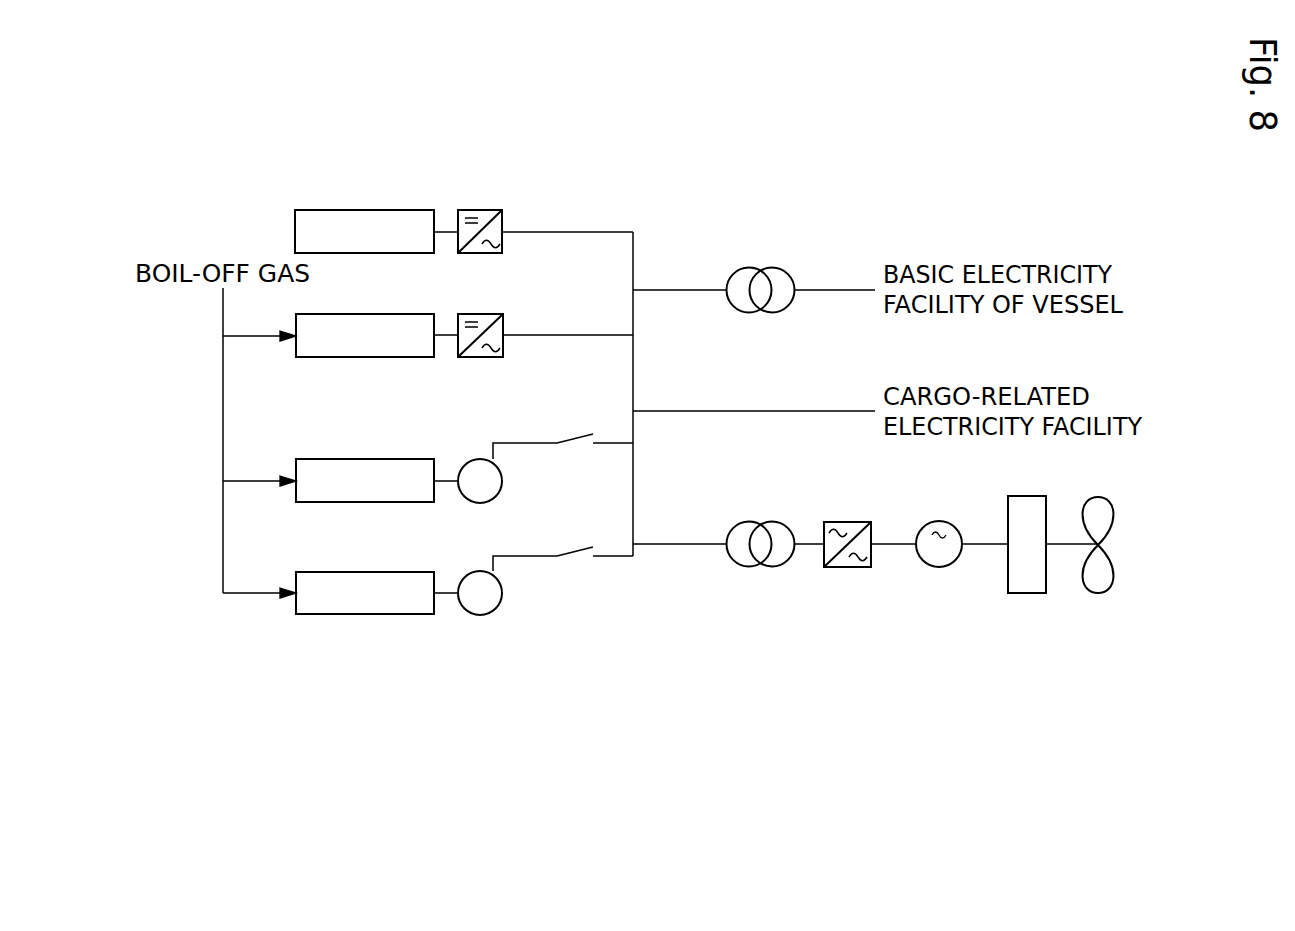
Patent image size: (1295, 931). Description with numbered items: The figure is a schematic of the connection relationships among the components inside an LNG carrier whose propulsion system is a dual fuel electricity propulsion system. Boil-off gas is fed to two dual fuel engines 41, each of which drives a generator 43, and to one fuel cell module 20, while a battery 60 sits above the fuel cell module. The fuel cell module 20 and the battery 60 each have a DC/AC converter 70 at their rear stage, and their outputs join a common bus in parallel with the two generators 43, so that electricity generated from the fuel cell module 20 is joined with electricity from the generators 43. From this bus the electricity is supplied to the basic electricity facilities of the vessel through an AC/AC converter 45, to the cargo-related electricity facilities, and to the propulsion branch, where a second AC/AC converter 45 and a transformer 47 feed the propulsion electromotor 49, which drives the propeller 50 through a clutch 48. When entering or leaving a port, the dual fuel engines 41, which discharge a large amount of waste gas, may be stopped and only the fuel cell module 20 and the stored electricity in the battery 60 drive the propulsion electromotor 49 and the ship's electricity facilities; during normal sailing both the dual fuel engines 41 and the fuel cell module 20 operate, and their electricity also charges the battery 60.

The fuel cell module 20 is at (402, 314).
The battery 60 is at (402, 210).
The DC/AC converter 70 is at (478, 210).
The dual fuel engine 41 is at (403, 459).
The generator 43 is at (502, 481).
The AC/AC converter 45 is at (772, 268).
The transformer 47 is at (848, 522).
The clutch 48 is at (1028, 496).
The propulsion electromotor 49 is at (940, 522).
The propeller 50 is at (1098, 497).